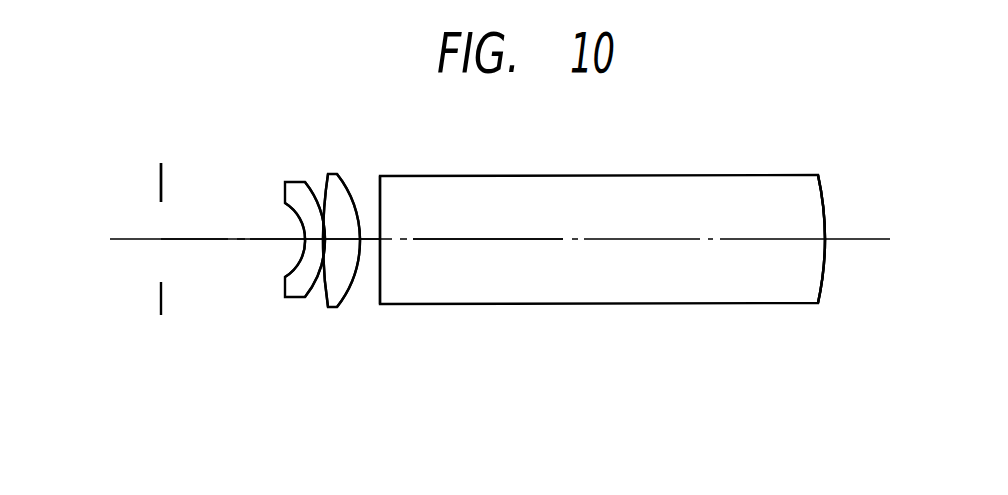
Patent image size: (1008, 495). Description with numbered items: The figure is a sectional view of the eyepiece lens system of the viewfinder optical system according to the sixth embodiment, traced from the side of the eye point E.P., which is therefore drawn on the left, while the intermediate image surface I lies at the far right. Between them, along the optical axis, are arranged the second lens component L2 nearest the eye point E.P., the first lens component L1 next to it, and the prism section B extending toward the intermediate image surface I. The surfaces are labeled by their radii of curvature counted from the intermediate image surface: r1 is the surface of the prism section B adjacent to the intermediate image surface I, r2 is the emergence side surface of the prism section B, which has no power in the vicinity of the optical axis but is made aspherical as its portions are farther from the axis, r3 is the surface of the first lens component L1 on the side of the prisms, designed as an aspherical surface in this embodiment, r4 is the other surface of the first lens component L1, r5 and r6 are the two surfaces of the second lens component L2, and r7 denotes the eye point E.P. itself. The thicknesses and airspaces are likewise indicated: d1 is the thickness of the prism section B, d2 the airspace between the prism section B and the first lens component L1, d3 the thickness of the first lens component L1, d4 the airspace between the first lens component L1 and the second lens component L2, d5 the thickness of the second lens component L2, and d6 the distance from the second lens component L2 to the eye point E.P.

The radius of curvature of first surface r1 is at (823, 188).
The radius of curvature of second surface r2 is at (380, 197).
The radius of curvature of third surface r3 is at (349, 190).
The radius of curvature of fourth surface r4 is at (325, 193).
The radius of curvature of fifth surface r5 is at (304, 184).
The radius of curvature of sixth surface r6 is at (285, 203).
The eye point surface r7 is at (161, 177).
The thickness of prism section d1 is at (505, 242).
The airspace between prism section and first lens component d2 is at (372, 242).
The thickness of first lens component d3 is at (345, 240).
The airspace between first and second lens components d4 is at (323, 238).
The thickness of second lens component d5 is at (303, 249).
The distance to eye point d6 is at (208, 243).
The first lens component L1 is at (333, 290).
The second lens component L2 is at (295, 290).
The prism section B is at (587, 290).
The intermediate image surface I is at (825, 243).
The eye point E.P. is at (162, 255).